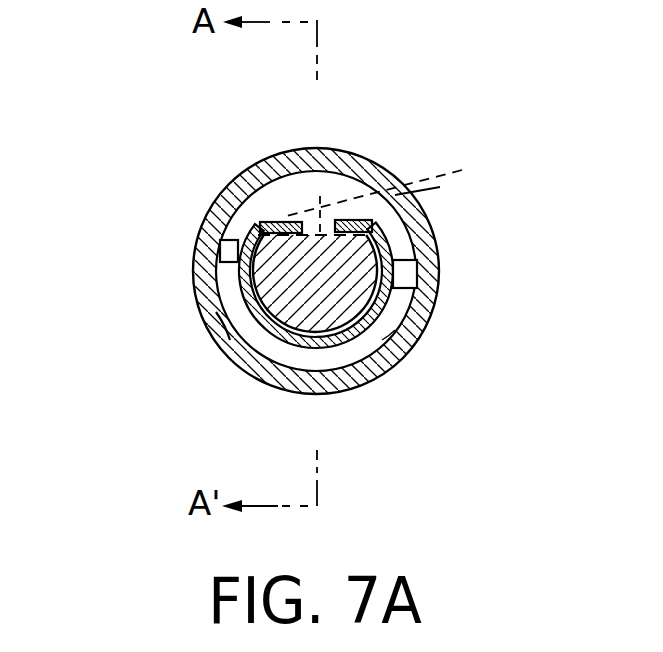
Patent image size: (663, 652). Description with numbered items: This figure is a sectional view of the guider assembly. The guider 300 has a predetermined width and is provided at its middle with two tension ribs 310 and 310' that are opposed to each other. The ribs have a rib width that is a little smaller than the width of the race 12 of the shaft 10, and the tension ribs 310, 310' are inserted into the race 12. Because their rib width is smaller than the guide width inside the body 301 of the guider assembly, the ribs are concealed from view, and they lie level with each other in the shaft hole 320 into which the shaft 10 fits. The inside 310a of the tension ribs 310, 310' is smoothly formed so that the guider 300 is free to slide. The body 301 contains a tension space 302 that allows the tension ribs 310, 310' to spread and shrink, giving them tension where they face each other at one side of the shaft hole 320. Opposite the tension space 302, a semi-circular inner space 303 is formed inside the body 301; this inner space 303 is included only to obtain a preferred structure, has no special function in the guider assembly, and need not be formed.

The guider 300 is at (201, 198).
The body 301 is at (212, 312).
The tension space 302 is at (322, 193).
The semi-circular inner space 303 is at (280, 345).
The tension rib 310 is at (191, 254).
The tension rib 310' is at (436, 231).
The inside of tension ribs 310a is at (250, 258).
The shaft hole 320 is at (353, 290).
The race 12 is at (388, 174).
The shaft 10 is at (390, 322).